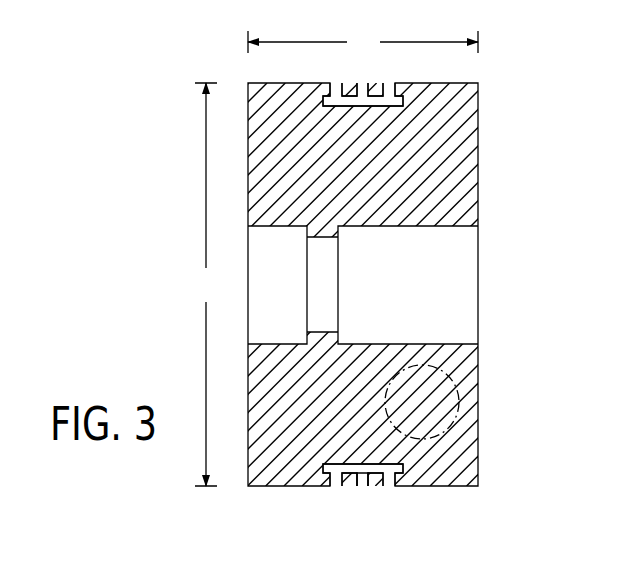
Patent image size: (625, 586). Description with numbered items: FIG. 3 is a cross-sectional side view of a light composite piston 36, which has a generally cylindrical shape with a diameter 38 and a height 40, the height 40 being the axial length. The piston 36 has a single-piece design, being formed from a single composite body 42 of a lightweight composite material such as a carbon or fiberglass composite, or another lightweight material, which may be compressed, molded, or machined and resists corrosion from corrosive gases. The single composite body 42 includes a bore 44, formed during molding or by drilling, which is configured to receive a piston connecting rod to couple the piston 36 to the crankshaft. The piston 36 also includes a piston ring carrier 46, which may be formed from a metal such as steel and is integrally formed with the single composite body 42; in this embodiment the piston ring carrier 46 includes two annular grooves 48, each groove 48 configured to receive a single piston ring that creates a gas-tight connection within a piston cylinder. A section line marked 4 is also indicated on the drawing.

The piston 36 is at (312, 288).
The diameter 38 is at (206, 284).
The height 40 is at (363, 42).
The single composite body 42 is at (478, 163).
The bore 44 is at (510, 301).
The piston ring carrier 46 is at (363, 480).
The annular grooves 48 is at (377, 81).
The section line 4- 4 is at (413, 376).